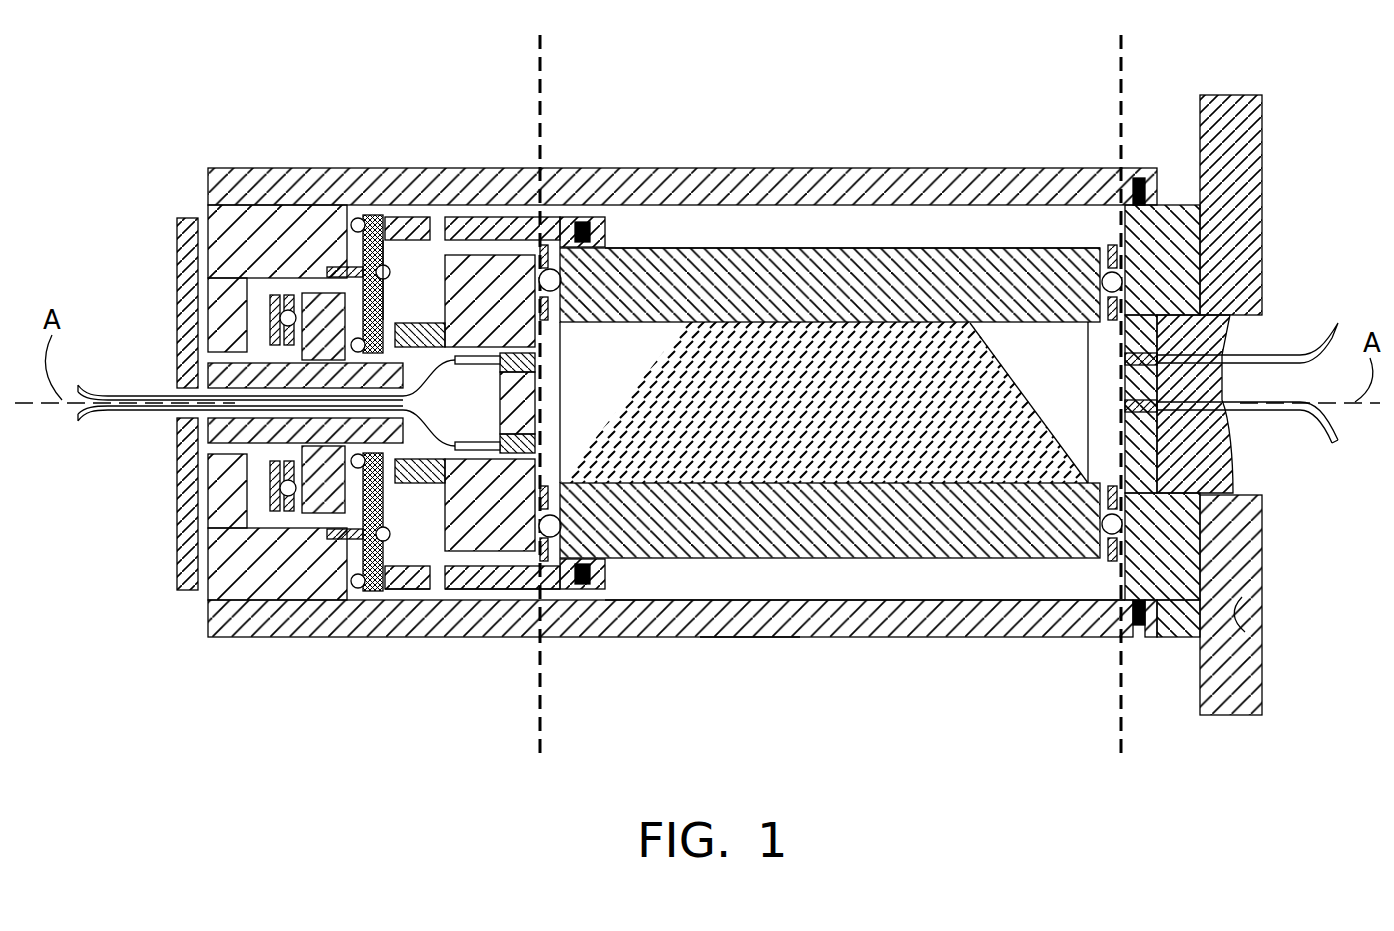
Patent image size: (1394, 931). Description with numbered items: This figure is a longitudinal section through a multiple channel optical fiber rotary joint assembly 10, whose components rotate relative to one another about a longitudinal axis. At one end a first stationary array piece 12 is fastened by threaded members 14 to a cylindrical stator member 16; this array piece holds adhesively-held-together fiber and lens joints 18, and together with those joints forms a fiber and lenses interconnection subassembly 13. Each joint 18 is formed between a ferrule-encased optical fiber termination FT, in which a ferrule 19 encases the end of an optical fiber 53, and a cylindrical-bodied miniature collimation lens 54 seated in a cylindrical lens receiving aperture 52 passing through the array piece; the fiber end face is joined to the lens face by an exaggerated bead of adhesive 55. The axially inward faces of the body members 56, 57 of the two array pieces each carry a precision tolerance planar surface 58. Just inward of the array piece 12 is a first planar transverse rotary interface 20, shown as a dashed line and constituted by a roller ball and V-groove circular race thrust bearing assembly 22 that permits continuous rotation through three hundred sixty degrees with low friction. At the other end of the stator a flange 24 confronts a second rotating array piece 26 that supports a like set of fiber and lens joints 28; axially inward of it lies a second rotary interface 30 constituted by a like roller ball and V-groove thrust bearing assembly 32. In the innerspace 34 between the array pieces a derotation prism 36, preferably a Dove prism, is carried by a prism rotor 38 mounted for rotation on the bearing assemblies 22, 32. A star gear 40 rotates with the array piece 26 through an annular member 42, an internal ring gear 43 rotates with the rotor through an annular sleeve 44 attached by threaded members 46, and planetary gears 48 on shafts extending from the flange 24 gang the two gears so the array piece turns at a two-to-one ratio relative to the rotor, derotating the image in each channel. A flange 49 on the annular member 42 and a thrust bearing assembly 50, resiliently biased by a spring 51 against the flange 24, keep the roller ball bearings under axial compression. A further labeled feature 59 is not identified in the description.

The rotary joint assembly 10 is at (778, 654).
The first stationary array piece 12 is at (1165, 217).
The fiber and lenses interconnection subassembly 13 is at (1118, 342).
The threaded members 14 is at (1162, 182).
The cylindrical stator member 16 is at (952, 186).
The fiber and lens joint 18 is at (1142, 330).
The ferrule 19 is at (1194, 412).
The first planar transverse rotary interface 20 is at (1119, 60).
The roller ball and V-groove circular race thrust bearing assembly 22 is at (1175, 515).
The flange 24 is at (220, 320).
The second rotating array piece 26 is at (412, 594).
The fiber and lens joints 28 is at (518, 432).
The second rotary interface 30 is at (548, 70).
The roller ball and V-groove thrust bearing assembly 32 is at (496, 590).
The innerspace 34 is at (796, 597).
The derotation prism 36 is at (656, 378).
The prism rotor 38 is at (768, 262).
The star gear 40 is at (387, 318).
The annular member 42 is at (455, 262).
The internal ring gear 43 is at (345, 268).
The annular sleeve 44 is at (470, 217).
The threaded members 46 is at (586, 222).
The planetary gears 48 is at (373, 215).
The flange 49 is at (350, 300).
The thrust bearing assembly 50 is at (243, 284).
The spring 51 is at (244, 487).
The cylindrical lens receiving aperture 52 is at (1152, 410).
The optical fiber 53 is at (206, 397).
The cylindrical-bodied miniature collimation lens 54 is at (1118, 406).
The bead of adhesive 55 is at (512, 394).
The body member 56 is at (1232, 598).
The body member 57 is at (545, 250).
The precision tolerance planar surface 58 is at (1108, 240).
The inner surface 59 is at (1062, 247).
The ferrule-encased optical fiber termination FT is at (1200, 378).